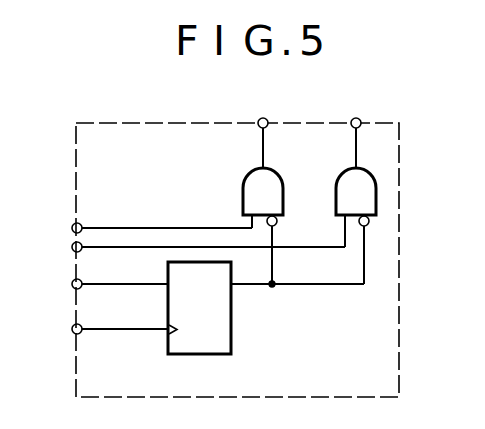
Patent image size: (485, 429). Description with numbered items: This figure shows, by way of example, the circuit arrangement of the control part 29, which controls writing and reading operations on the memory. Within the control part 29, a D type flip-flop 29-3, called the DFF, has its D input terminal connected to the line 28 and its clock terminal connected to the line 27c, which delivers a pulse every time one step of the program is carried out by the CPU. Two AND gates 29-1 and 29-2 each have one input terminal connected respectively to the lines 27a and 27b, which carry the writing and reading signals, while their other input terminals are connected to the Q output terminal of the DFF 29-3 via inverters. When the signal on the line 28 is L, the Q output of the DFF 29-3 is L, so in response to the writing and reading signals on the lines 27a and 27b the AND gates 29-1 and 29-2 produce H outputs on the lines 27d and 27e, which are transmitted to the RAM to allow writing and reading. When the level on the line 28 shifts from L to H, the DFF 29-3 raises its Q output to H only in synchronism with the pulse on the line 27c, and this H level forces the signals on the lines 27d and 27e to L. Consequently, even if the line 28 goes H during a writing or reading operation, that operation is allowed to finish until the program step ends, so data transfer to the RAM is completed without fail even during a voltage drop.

The control part 29 is at (399, 140).
The AND gate 29-1 is at (283, 171).
The AND gate 29-2 is at (337, 171).
The D type flip-flop 29-3 is at (232, 314).
The line 27a is at (146, 227).
The line 27b is at (192, 248).
The line 27c is at (104, 328).
The line 27d is at (264, 109).
The line 27e is at (356, 109).
The line 28 is at (106, 283).